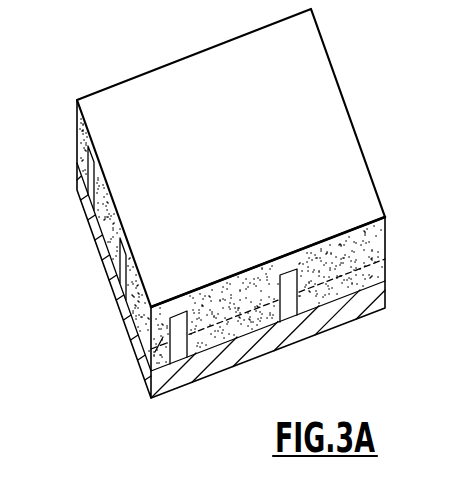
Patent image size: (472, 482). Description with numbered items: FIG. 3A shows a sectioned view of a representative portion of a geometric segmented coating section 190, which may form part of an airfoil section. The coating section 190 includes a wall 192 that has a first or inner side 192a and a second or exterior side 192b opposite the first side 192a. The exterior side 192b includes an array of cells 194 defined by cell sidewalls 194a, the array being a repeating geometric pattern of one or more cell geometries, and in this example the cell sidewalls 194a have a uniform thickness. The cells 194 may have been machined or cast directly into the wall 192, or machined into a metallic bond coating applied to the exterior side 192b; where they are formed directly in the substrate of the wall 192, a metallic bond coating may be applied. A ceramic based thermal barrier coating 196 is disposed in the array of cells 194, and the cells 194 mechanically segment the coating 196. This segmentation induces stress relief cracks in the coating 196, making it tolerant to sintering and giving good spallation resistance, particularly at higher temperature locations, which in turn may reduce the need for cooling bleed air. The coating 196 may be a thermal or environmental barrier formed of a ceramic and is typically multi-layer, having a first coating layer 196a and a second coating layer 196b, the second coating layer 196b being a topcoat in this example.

The geometric segmented coating section 190 is at (106, 402).
The wall 192 is at (267, 309).
The first or inner side 192a is at (306, 340).
The second or exterior side 192b is at (356, 290).
The cells 194 is at (231, 300).
The cell sidewalls 194a is at (306, 275).
The ceramic based thermal barrier coating 196 is at (178, 307).
The first coating layer 196a is at (375, 272).
The second coating layer 196b is at (152, 363).